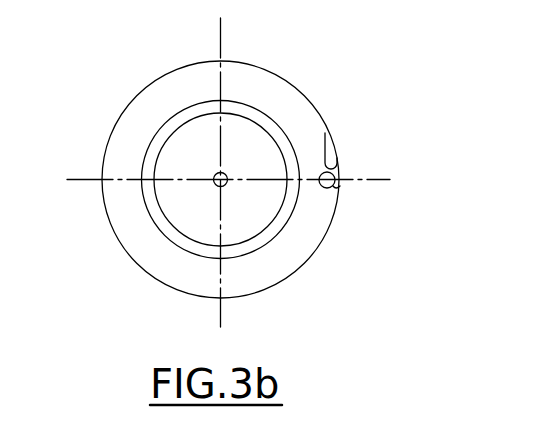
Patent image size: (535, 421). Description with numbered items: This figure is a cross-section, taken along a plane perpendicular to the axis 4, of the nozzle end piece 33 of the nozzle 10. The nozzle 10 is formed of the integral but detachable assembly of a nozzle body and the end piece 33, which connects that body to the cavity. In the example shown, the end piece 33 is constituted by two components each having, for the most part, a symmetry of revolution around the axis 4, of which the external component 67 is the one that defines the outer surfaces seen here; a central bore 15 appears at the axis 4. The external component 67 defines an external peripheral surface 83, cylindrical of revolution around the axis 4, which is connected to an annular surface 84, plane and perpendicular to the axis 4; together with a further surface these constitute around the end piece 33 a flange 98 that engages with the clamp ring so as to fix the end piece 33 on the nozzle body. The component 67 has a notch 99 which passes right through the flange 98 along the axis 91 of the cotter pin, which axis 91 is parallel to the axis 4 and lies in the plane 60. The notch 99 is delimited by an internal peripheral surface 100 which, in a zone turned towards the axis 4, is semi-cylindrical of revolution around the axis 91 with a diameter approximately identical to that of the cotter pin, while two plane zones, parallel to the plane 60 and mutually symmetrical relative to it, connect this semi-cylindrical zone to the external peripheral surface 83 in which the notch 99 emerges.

The nozzle 10 is at (88, 154).
The axis 4 is at (237, 144).
The central bore 15 is at (216, 177).
The nozzle end piece 33 is at (150, 255).
The external component 67 is at (118, 220).
The external peripheral surface 83 is at (173, 70).
The annular surface 84 is at (133, 108).
The axis of cotter pin 91 is at (333, 163).
The flange 98 is at (262, 273).
The notch 99 is at (340, 183).
The internal peripheral surface 100 is at (349, 168).
The plane 60 is at (376, 172).